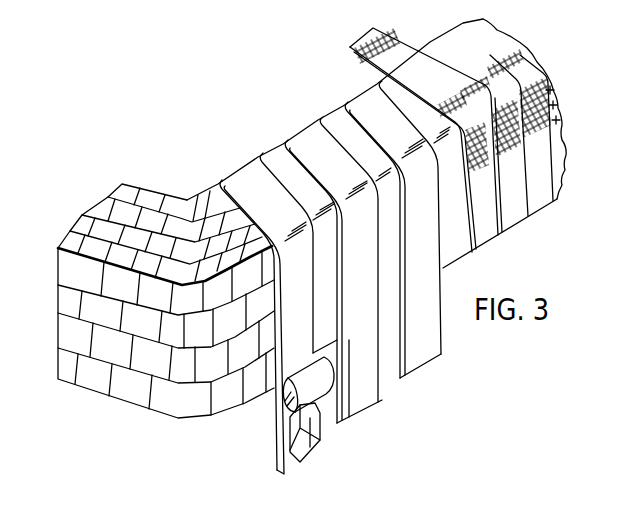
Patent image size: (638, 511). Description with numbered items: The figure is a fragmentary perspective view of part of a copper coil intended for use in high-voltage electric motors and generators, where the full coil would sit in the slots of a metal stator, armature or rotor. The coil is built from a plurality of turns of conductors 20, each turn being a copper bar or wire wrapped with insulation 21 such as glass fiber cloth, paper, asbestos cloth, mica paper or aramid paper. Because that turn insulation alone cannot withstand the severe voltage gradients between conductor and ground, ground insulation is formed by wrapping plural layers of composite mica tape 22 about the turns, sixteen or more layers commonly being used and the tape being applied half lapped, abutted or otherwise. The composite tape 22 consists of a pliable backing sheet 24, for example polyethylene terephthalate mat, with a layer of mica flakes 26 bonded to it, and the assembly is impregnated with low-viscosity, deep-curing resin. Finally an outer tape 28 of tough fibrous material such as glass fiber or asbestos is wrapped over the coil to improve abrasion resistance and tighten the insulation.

The conductors 20 is at (72, 229).
The insulation 21 is at (163, 196).
The composite mica tape 22 is at (276, 409).
The pliable backing sheet 24 is at (323, 388).
The layer of mica flakes 26 is at (311, 450).
The outer tape 28 is at (535, 190).